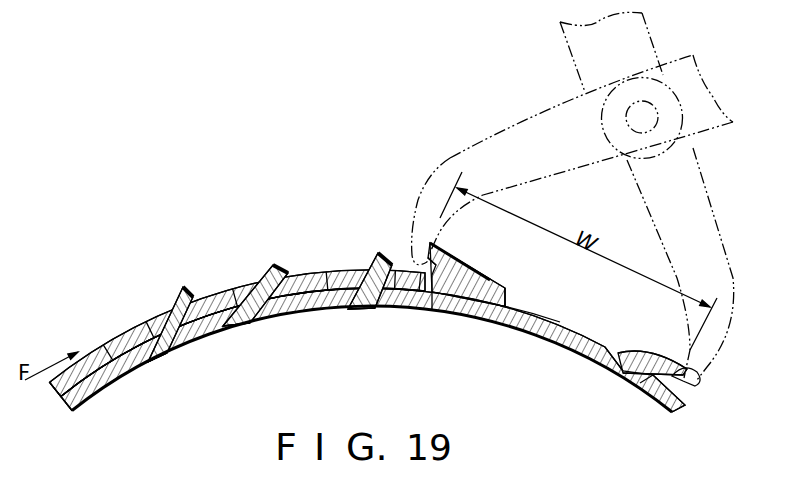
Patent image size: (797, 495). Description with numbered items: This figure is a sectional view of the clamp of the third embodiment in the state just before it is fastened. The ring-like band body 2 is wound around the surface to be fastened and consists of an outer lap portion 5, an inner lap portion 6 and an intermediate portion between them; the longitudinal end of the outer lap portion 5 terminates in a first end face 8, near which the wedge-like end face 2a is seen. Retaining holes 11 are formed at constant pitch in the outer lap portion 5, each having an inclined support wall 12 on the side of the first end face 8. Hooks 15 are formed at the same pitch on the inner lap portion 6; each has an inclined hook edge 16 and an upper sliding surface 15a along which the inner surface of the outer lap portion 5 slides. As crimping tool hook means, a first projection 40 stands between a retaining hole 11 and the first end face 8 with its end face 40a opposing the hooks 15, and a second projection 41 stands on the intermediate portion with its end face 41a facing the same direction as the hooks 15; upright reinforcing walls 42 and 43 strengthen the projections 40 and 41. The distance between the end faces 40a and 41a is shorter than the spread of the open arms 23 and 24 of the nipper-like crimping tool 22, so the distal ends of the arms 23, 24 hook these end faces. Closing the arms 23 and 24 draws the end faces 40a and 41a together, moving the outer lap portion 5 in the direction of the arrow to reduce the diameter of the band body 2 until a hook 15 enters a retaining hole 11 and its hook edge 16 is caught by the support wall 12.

The band body 2 is at (665, 413).
The end face of wedge 2a is at (507, 290).
The outer lap portion 5 is at (58, 393).
The inner lap portion 6 is at (104, 393).
The first end face 8 is at (507, 303).
The retaining hole 11 is at (97, 357).
The support wall 12 is at (203, 300).
The hook 15 is at (175, 305).
The sliding surface 15a is at (188, 283).
The hook edge 16 is at (183, 346).
The crimping tool 22 is at (563, 47).
The arm 23 is at (450, 158).
The arm 24 is at (713, 222).
The first projection 40 is at (460, 263).
The end face of first projection 40a is at (428, 262).
The second projection 41 is at (643, 353).
The end face of second projection 41a is at (686, 386).
The upright reinforcing wall 42 is at (433, 313).
The upright reinforcing wall 43 is at (645, 397).